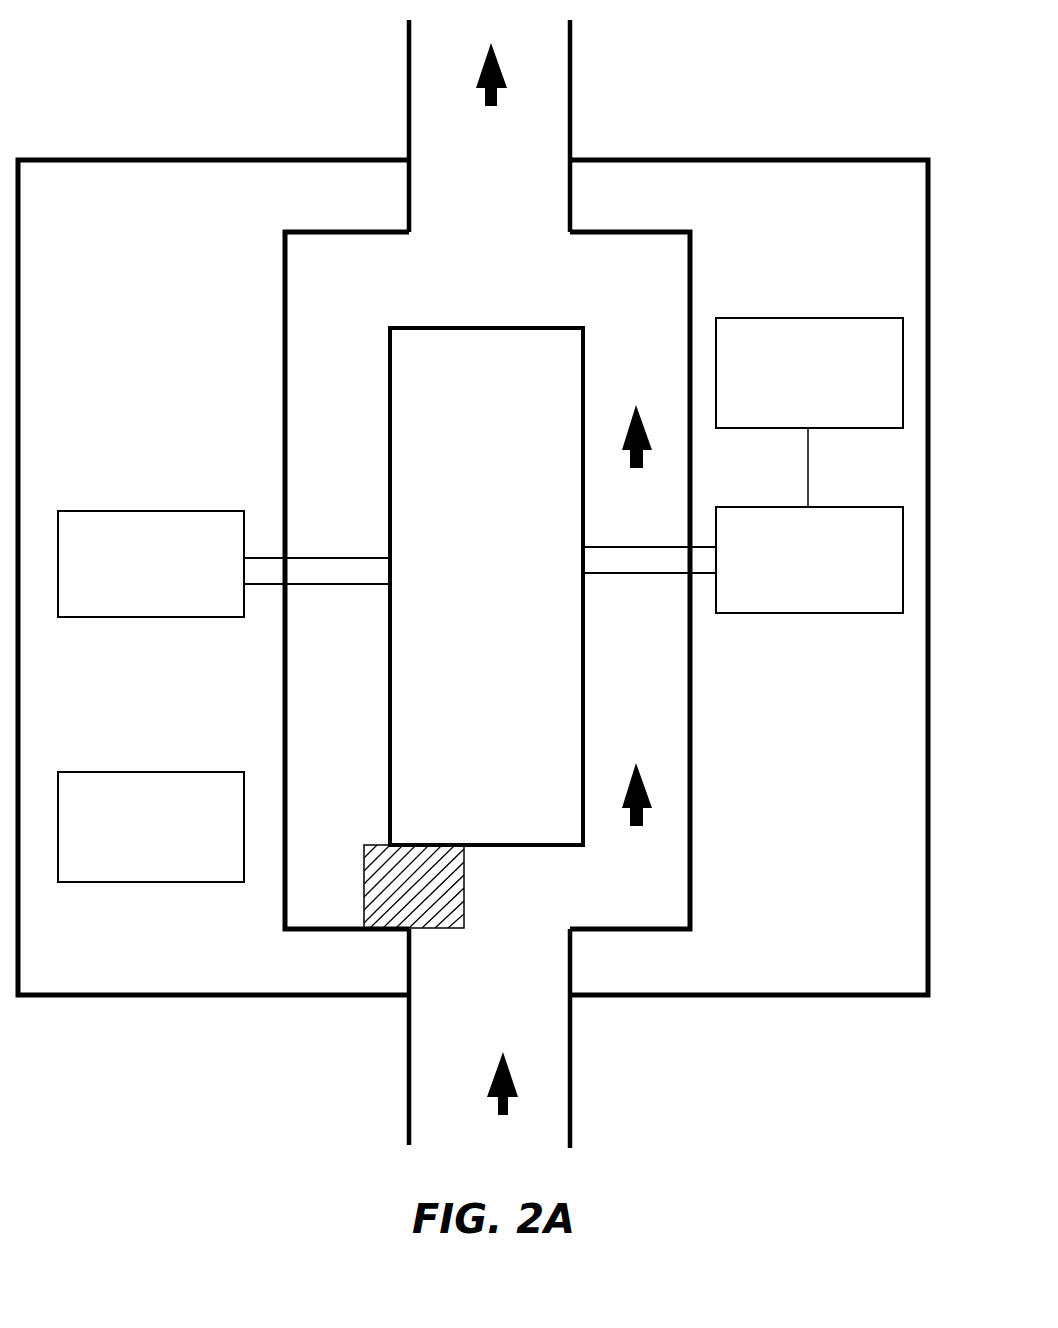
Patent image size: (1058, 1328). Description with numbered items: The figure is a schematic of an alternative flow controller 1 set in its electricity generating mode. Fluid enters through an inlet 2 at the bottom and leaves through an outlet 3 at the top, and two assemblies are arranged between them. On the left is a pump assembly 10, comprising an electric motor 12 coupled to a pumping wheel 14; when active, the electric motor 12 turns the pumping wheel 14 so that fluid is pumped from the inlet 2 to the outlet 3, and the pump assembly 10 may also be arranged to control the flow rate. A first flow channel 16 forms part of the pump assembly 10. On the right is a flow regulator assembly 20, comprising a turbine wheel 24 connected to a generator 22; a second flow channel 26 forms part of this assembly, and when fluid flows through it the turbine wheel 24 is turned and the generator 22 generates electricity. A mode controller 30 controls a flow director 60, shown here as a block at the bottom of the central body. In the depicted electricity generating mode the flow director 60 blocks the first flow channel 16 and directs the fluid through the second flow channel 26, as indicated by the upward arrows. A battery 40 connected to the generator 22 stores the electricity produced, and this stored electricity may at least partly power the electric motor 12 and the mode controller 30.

The flow controller 1 is at (198, 98).
The inlet 2 is at (538, 1082).
The outlet 3 is at (522, 145).
The pump assembly 10 is at (224, 522).
The electric motor 12 is at (213, 535).
The pumping wheel 14 is at (337, 572).
The first flow channel 16 is at (323, 707).
The flow regulator assembly 20 is at (743, 613).
The generator 22 is at (853, 575).
The turbine wheel 24 is at (641, 562).
The second flow channel 26 is at (653, 762).
The mode controller 30 is at (100, 868).
The battery 40 is at (812, 332).
The flow director 60 is at (395, 907).